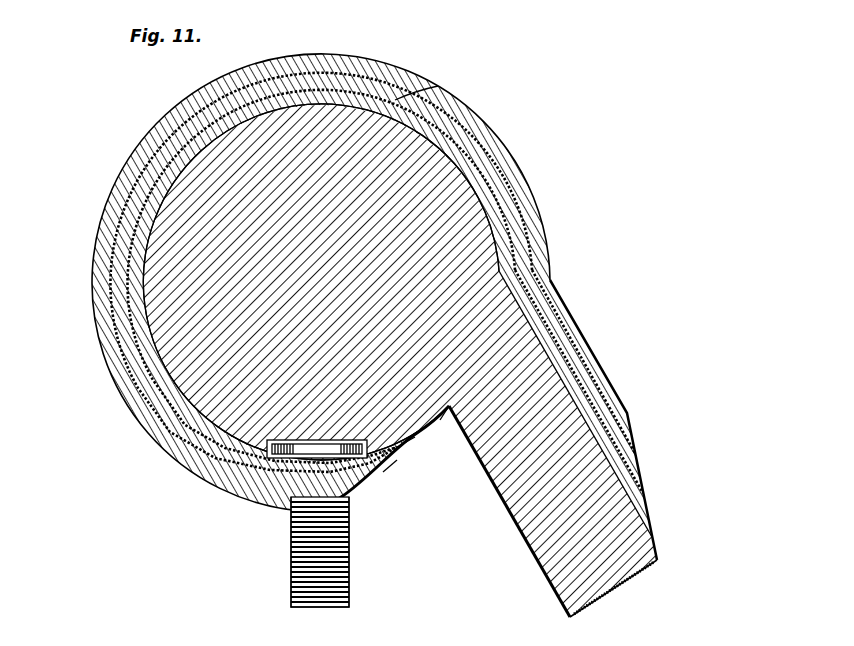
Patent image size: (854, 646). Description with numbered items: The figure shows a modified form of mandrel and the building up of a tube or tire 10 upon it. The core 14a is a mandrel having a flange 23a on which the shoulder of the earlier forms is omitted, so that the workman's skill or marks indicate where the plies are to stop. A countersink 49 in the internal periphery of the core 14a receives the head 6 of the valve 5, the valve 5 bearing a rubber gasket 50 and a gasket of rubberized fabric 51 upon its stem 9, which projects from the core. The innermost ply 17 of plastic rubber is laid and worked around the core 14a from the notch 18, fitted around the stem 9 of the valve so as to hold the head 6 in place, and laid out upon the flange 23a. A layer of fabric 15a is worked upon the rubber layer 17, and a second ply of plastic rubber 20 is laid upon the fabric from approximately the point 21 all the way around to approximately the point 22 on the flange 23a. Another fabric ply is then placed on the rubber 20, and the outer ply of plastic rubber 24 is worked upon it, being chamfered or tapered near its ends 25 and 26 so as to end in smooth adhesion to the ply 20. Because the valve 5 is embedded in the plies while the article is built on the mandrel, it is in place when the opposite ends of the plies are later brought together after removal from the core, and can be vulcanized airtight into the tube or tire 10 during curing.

The valve 5 is at (348, 558).
The head of valve 6 is at (283, 488).
The stem threads 9 is at (348, 577).
The tube or tire 10 is at (503, 157).
The core 14a is at (173, 323).
The fabric layer 15a is at (393, 102).
The layer of plastic rubber 17 is at (490, 222).
The notch 18 is at (447, 410).
The second ply of plastic rubber 20 is at (438, 120).
The point 21 is at (415, 437).
The point 22 is at (653, 556).
The flange 23a is at (555, 536).
The outer ply of plastic rubber 24 is at (540, 261).
The end of outer ply 25 is at (383, 472).
The end of outer ply 26 is at (643, 507).
The countersink 49 is at (262, 456).
The rubber gasket 50 is at (183, 460).
The gasket of rubberized fabric 51 is at (255, 482).